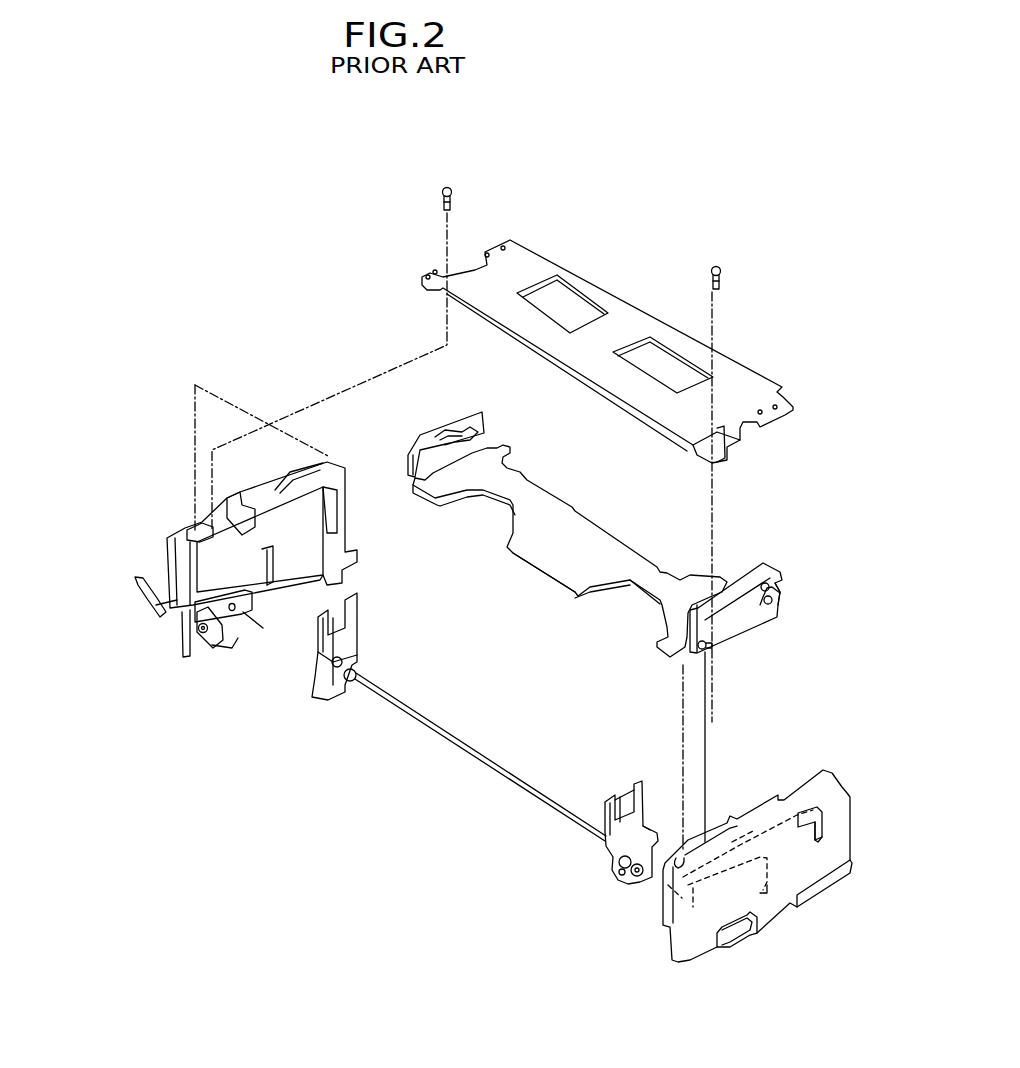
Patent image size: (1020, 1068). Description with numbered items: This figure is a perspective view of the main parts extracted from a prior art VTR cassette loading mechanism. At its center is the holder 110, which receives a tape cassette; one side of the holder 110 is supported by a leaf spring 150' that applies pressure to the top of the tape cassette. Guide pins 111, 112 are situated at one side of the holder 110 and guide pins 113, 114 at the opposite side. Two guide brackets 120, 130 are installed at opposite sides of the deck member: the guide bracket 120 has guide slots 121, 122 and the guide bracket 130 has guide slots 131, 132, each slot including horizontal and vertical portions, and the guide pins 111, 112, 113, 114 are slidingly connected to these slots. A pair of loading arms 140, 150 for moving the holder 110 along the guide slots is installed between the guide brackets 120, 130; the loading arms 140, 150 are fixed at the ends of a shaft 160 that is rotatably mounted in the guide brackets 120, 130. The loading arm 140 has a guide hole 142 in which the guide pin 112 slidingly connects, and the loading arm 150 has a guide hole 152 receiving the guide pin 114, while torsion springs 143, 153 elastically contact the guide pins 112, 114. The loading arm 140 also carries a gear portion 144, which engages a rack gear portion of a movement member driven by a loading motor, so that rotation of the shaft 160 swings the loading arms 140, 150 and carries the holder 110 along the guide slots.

The holder 110 is at (766, 556).
The guide pin 111 is at (781, 590).
The guide pin 112 is at (705, 649).
The guide pin 113 is at (453, 408).
The guide pin 114 is at (402, 458).
The guide bracket 120 is at (850, 775).
The guide slot 121 is at (820, 842).
The guide slot 122 is at (767, 895).
The guide bracket 130 is at (166, 526).
The guide slot 131 is at (332, 508).
The guide slot 132 is at (192, 572).
The loading arm 140 is at (605, 883).
The guide hole 142 is at (627, 788).
The torsion spring 143 is at (610, 837).
The gear portion 144 is at (642, 887).
The loading arm 150 is at (287, 709).
The leaf spring 150' is at (570, 535).
The guide hole 152 is at (332, 605).
The torsion spring 153 is at (318, 668).
The shaft 160 is at (458, 752).